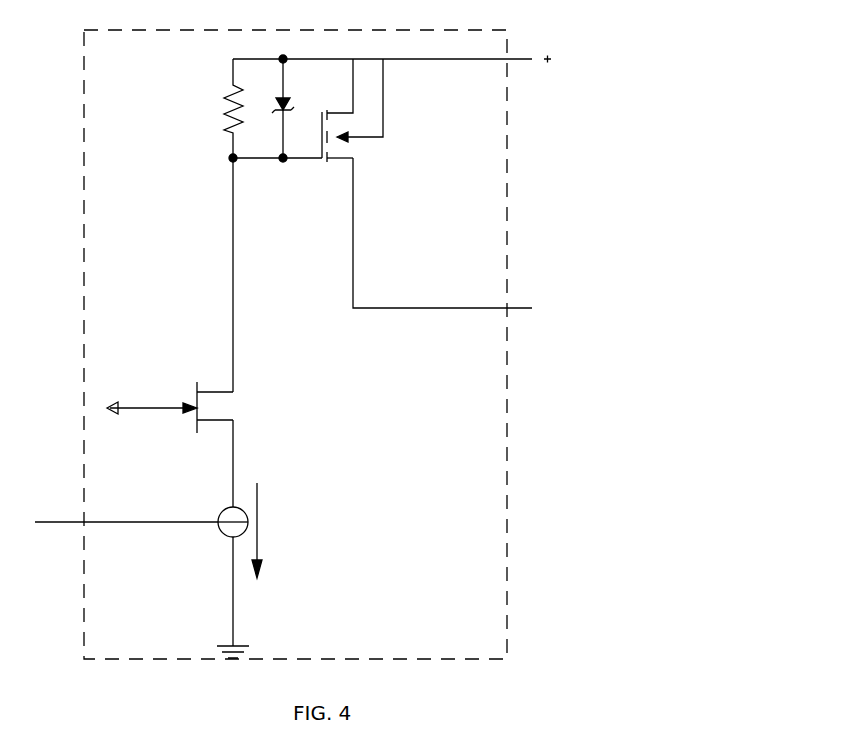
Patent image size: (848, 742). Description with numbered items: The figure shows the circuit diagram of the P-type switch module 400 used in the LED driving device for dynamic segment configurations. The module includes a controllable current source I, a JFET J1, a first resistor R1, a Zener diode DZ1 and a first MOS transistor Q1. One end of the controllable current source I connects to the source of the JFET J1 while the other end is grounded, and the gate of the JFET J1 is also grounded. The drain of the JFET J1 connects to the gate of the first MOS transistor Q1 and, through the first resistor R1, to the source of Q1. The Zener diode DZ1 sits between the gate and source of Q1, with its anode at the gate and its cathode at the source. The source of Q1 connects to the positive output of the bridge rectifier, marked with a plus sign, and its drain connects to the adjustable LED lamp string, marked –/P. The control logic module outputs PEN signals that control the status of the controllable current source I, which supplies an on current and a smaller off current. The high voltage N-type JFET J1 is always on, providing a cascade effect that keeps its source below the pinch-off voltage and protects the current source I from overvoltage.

The P-type switch module 400 is at (328, 344).
The first resistor R1 is at (213, 108).
The Zener diode DZ1 is at (296, 108).
The first MOS transistor Q1 is at (372, 110).
The JFET J1 is at (184, 407).
The controllable current source I is at (233, 530).
The PEN signals PEN is at (120, 509).